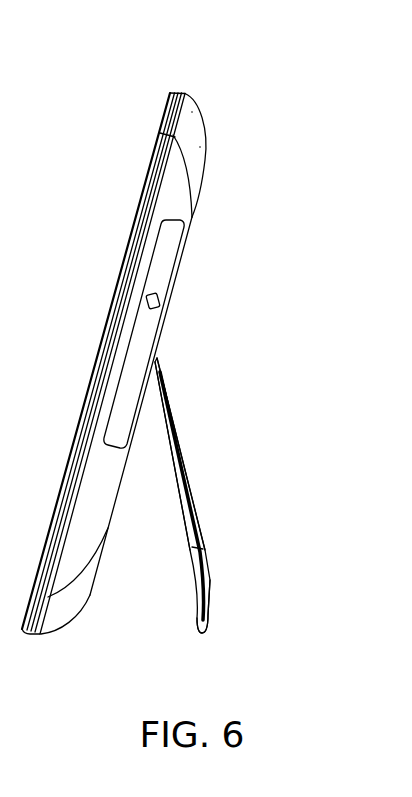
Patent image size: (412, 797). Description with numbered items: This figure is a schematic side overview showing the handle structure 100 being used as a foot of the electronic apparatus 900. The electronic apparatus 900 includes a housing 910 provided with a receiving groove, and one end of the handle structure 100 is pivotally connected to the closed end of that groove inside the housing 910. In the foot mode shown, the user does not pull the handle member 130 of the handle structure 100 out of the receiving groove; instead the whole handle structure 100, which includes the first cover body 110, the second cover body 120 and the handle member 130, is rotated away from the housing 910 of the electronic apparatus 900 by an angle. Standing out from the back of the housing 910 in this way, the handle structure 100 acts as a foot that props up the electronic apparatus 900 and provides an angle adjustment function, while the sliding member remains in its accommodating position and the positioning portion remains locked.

The electronic apparatus 900 is at (218, 146).
The housing 910 is at (180, 197).
The handle structure 100 is at (190, 487).
The first cover body 110 is at (183, 521).
The second cover body 120 is at (170, 420).
The handle member 130 is at (203, 580).